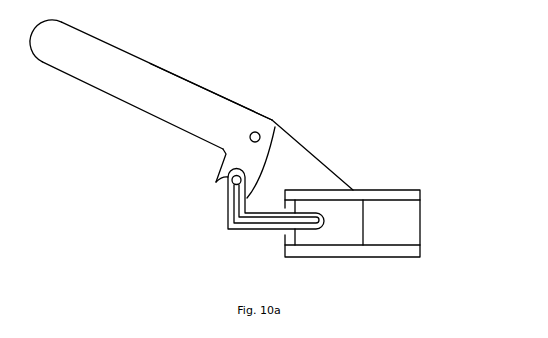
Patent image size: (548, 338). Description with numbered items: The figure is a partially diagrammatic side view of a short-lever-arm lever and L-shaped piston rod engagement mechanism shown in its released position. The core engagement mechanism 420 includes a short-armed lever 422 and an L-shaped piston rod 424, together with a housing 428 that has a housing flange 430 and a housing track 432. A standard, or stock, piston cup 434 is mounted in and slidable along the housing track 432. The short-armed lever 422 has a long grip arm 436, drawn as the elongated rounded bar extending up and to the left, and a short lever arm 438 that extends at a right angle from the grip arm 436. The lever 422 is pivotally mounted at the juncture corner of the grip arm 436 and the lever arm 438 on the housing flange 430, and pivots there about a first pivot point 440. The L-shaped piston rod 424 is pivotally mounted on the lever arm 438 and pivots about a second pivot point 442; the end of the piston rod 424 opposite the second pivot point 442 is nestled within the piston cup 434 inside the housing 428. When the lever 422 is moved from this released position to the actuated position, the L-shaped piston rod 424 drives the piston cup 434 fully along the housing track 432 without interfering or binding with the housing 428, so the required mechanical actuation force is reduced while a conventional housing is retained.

The core engagement mechanism 420 is at (323, 65).
The short-armed lever 422 is at (145, 112).
The L-shaped piston rod 424 is at (258, 230).
The housing 428 is at (380, 189).
The housing flange 430 is at (327, 160).
The housing track 432 is at (413, 187).
The piston cup 434 is at (363, 227).
The grip arm 436 is at (182, 78).
The lever arm 438 is at (219, 165).
The first pivot point 440 is at (259, 133).
The second pivot point 442 is at (216, 184).